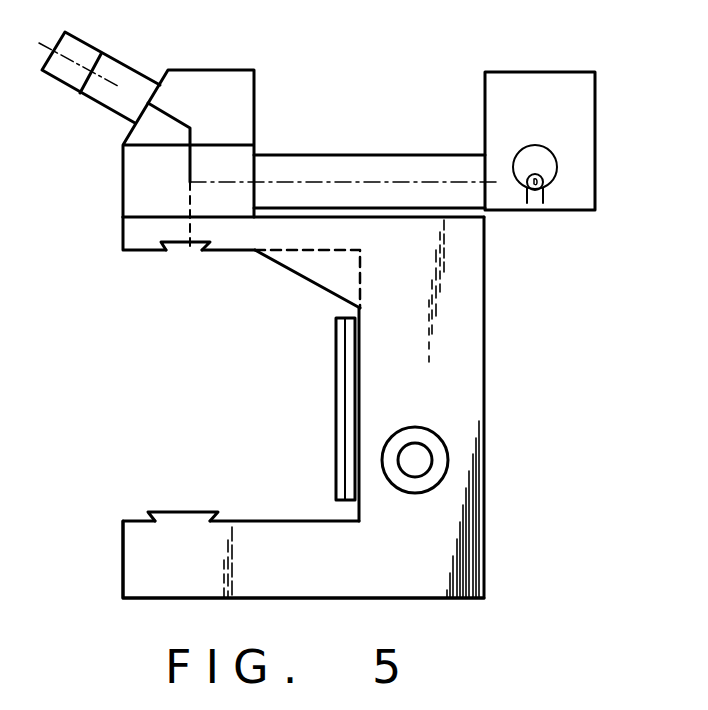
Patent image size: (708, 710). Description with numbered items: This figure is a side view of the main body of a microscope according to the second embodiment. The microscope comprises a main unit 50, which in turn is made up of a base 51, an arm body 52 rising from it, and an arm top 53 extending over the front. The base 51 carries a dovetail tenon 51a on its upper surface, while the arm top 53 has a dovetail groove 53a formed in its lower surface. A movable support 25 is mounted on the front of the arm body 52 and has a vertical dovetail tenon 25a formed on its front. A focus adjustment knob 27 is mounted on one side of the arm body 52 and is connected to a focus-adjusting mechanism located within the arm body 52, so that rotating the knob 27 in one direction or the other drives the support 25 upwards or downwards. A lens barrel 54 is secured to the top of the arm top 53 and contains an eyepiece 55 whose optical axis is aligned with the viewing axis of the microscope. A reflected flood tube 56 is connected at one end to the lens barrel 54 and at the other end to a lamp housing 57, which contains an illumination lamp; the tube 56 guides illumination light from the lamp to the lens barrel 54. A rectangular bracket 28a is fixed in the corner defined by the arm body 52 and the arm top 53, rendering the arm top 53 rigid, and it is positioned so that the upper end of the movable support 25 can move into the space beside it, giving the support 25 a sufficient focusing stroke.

The main unit 50 is at (486, 303).
The base 51 is at (145, 556).
The dovetail tenon 51a is at (177, 511).
The arm body 52 is at (472, 358).
The arm top 53 is at (136, 232).
The dovetail groove 53a is at (190, 250).
The lens barrel 54 is at (241, 62).
The eyepiece 55 is at (100, 52).
The reflected flood tube 56 is at (361, 168).
The lamp housing 57 is at (584, 168).
The movable support 25 is at (353, 358).
The vertical dovetail tenon 25a is at (337, 437).
The focus adjustment knob 27 is at (425, 463).
The rectangular bracket 28a is at (319, 272).